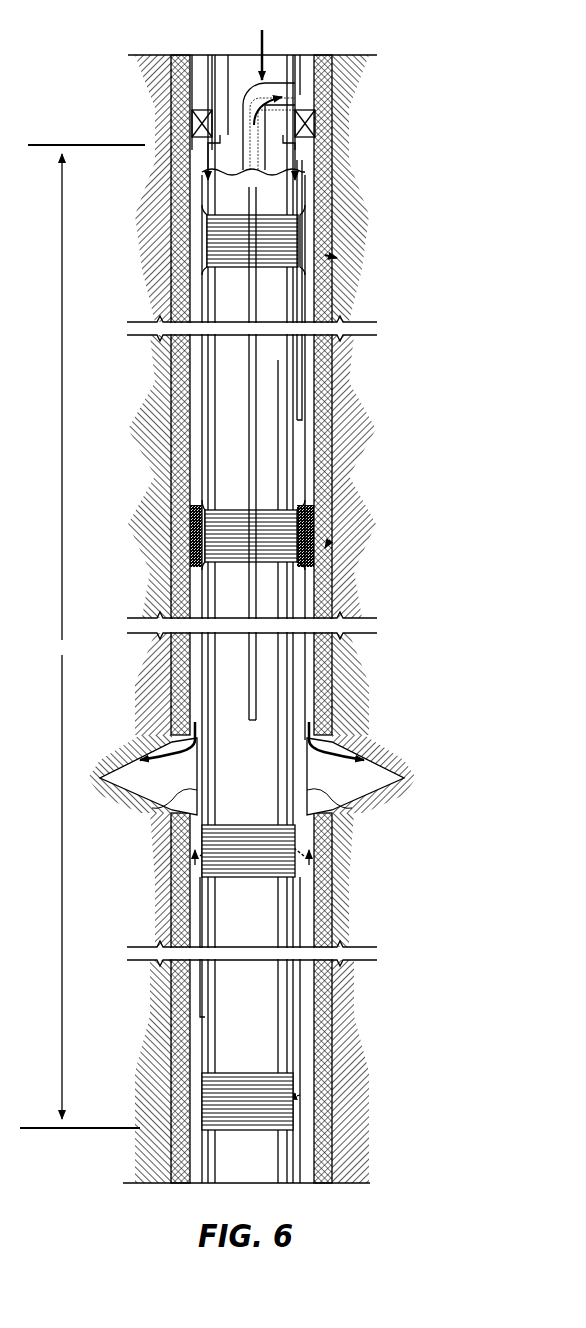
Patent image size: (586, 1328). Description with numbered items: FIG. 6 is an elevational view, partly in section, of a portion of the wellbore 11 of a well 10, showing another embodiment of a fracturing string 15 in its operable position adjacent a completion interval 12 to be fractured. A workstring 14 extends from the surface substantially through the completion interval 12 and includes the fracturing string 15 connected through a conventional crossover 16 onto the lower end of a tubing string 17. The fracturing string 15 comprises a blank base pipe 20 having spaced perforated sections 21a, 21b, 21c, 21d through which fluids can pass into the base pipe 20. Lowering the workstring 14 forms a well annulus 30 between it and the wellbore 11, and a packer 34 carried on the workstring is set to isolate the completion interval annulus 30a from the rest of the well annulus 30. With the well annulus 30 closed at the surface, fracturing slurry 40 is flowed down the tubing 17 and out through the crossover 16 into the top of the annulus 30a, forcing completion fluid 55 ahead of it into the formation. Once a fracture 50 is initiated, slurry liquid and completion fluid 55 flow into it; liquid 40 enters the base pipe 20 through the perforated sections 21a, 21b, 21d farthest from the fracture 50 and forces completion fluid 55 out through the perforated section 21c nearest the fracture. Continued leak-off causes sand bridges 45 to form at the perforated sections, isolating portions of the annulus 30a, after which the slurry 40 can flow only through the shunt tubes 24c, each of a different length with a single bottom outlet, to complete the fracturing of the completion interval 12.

The well 10 is at (137, 104).
The wellbore 11 is at (318, 52).
The completion interval 12 is at (82, 636).
The workstring 14 is at (195, 390).
The fracturing string 15 is at (300, 478).
The crossover 16 is at (270, 84).
The tubing string 17 is at (306, 70).
The base pipe 20 is at (232, 297).
The perforated section 21a is at (195, 235).
The perforated section 21b is at (200, 576).
The perforated section 21c is at (195, 875).
The perforated section 21d is at (200, 1095).
The shunt tube 24c is at (300, 293).
The well annulus 30 is at (200, 55).
The completion interval annulus 30a is at (305, 432).
The packer 34 is at (317, 124).
The fracturing slurry 40 is at (253, 33).
The sand bridge 45 is at (200, 532).
The fracture 50 is at (139, 762).
The completion fluid 55 is at (195, 810).